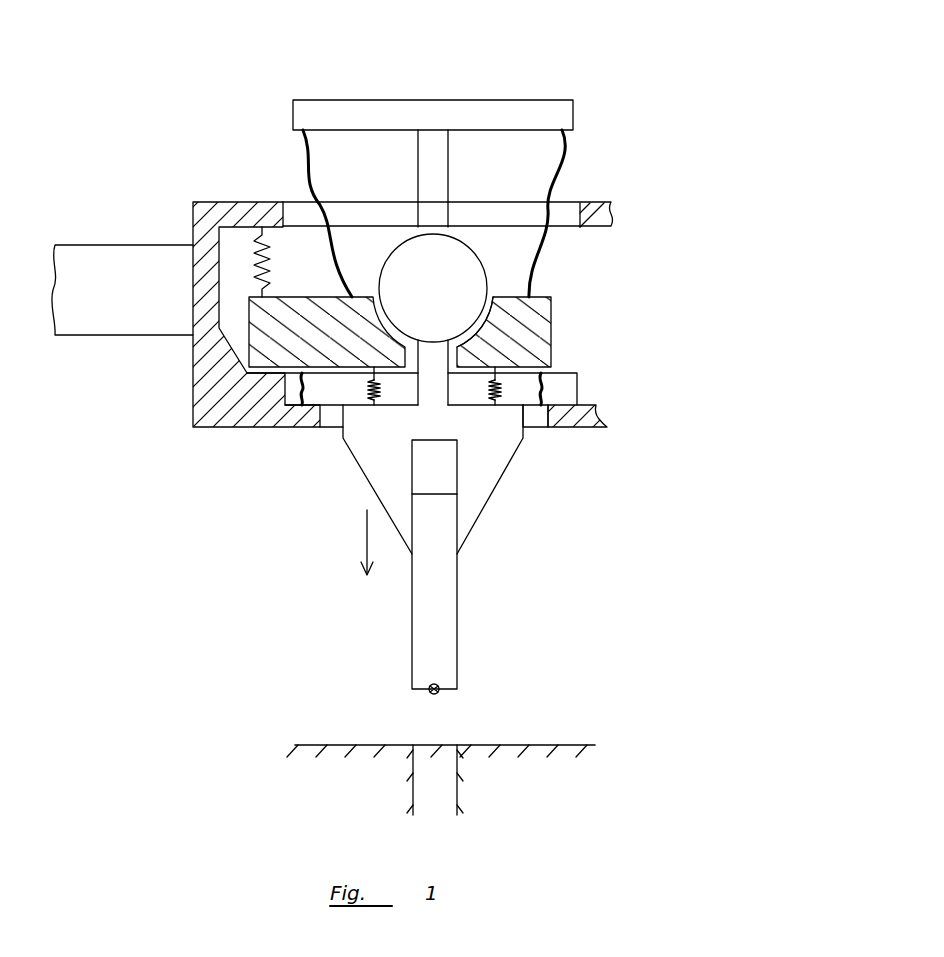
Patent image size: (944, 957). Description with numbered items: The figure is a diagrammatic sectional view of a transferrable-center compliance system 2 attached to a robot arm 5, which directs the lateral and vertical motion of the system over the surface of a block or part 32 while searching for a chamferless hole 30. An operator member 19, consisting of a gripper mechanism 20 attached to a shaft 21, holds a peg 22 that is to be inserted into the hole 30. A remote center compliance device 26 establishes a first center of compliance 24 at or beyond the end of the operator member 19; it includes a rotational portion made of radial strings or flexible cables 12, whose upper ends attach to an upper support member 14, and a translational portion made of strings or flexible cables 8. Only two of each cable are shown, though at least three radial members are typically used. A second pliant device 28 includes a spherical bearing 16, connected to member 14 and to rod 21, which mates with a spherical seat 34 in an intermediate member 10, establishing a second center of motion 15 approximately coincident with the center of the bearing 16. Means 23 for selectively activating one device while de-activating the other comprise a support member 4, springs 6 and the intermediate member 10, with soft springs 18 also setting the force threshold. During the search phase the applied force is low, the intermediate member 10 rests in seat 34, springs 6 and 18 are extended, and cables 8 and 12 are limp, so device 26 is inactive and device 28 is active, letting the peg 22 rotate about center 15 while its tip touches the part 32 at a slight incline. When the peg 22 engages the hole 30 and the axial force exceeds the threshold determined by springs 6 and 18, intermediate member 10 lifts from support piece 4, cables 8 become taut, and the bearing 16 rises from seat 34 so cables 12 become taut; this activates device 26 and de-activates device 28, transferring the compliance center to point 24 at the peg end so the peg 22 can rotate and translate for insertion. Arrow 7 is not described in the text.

The transferrable-center compliance system 2 is at (436, 38).
The support member 4 is at (193, 218).
The robot arm 5 is at (107, 335).
The springs 6 is at (267, 241).
The direction of movement arrow 7 is at (367, 525).
The flexible cables 8 is at (309, 388).
The intermediate member 10 is at (355, 365).
The flexible cables 12 is at (328, 203).
The upper support member 14 is at (525, 100).
The second center of motion 15 is at (433, 288).
The spherical bearing 16 is at (457, 236).
The springs 18 is at (383, 390).
The operator member 19 is at (521, 464).
The gripper mechanism 20 is at (524, 430).
The shaft 21 is at (449, 390).
The peg 22 is at (457, 592).
The selective activating means 23 is at (287, 172).
The first center of compliance 24 is at (440, 686).
The remote center compliance device 26 is at (570, 148).
The second pliant device 28 is at (503, 268).
The chamferless hole 30 is at (442, 745).
The block or part 32 is at (535, 745).
The spherical seat 34 is at (484, 324).